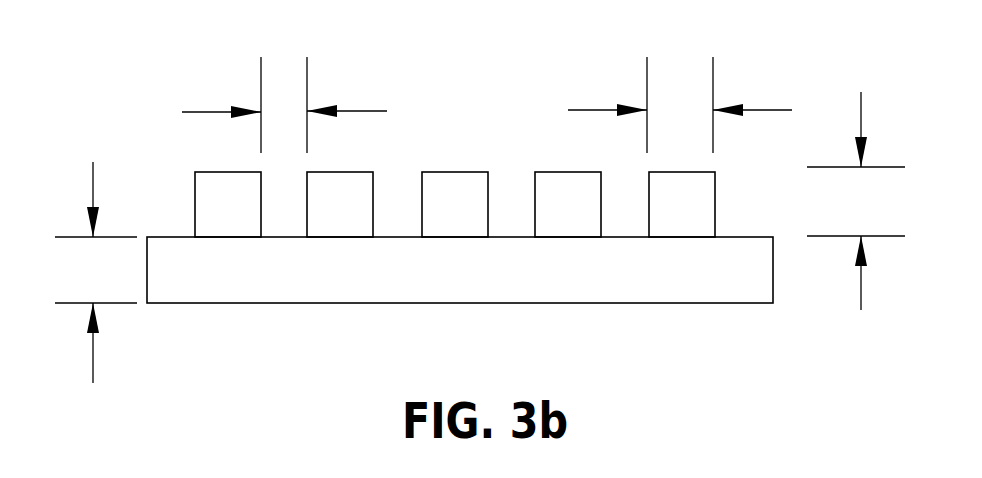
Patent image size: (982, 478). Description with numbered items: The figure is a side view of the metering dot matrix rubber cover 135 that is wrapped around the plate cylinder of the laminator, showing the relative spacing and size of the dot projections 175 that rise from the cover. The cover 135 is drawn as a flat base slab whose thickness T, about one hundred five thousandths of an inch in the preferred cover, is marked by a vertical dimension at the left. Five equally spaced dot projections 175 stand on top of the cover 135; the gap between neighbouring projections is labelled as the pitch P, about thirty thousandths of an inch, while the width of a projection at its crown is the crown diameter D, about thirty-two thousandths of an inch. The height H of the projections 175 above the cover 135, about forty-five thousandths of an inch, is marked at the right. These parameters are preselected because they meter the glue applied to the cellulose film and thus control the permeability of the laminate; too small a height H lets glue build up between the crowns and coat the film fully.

The metering dot matrix rubber cover 135 is at (623, 303).
The dot projections 175 is at (196, 202).
The pitch of the projections P is at (296, 105).
The crown diameter of the projections D is at (694, 105).
The height of the projections H is at (856, 201).
The thickness of the cover T is at (96, 272).